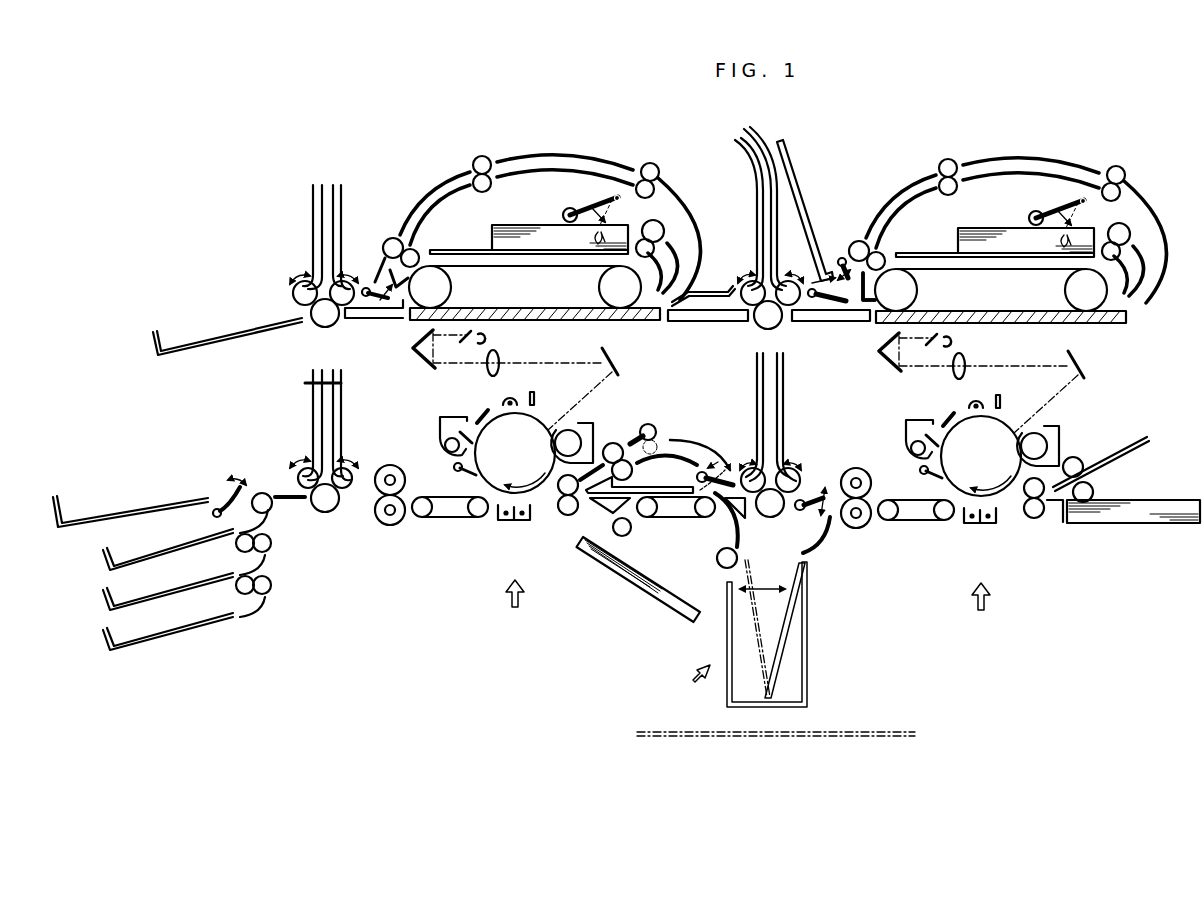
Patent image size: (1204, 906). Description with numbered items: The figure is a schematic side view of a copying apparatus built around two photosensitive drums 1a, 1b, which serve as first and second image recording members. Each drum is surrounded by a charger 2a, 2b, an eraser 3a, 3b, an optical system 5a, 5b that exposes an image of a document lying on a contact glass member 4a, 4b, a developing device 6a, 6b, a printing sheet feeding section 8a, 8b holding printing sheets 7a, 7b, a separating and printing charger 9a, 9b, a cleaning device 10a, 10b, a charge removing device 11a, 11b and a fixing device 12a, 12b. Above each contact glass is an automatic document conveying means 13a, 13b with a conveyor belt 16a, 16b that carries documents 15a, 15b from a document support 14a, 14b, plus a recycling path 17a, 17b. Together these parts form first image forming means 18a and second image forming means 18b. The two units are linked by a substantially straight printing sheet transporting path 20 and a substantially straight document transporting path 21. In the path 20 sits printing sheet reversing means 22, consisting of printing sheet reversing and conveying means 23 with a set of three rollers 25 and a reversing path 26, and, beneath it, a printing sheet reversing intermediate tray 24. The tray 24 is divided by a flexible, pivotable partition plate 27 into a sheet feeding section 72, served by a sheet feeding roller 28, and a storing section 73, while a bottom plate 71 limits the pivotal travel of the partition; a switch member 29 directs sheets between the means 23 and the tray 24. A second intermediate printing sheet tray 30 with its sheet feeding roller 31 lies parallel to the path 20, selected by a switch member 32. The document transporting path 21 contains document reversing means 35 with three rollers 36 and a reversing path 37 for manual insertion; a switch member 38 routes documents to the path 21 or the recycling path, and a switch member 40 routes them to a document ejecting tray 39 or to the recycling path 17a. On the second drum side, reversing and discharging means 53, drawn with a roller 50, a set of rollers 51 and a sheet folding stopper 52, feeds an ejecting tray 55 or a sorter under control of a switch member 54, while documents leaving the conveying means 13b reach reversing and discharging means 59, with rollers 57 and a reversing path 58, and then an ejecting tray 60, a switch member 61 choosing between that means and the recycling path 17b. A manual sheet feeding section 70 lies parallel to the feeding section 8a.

The photosensitive drum 1a is at (1019, 446).
The photosensitive drum 1b is at (478, 482).
The charger 2a is at (955, 390).
The charger 2b is at (503, 400).
The eraser 3a is at (1015, 390).
The eraser 3b is at (534, 395).
The contact glass member 4a is at (1011, 372).
The contact glass member 4b is at (628, 322).
The optical system 5a is at (948, 355).
The optical system 5b is at (473, 357).
The developing device 6a is at (1067, 469).
The developing device 6b is at (575, 425).
The printing sheet 7a is at (1095, 522).
The printing sheet 7b is at (660, 592).
The printing sheet feeding section 8a is at (1165, 525).
The printing sheet feeding section 8b is at (603, 553).
The separating and printing charger 9a is at (955, 539).
The separating and printing charger 9b is at (528, 522).
The cleaning device 10a is at (898, 447).
The cleaning device 10b is at (440, 440).
The charge removing device 11a is at (916, 404).
The charge removing device 11b is at (478, 418).
The fixing device 12a is at (876, 523).
The fixing device 12b is at (390, 526).
The automatic document conveying means 13a is at (1005, 238).
The automatic document conveying means 13b is at (427, 200).
The document support 14a is at (995, 199).
The document support 14b is at (513, 249).
The document 15a is at (1026, 187).
The document 15b is at (541, 224).
The conveyor belt 16a is at (991, 228).
The conveyor belt 16b is at (453, 272).
The recycling path 17a is at (1032, 140).
The recycling path 17b is at (603, 165).
The first image forming means 18a is at (988, 608).
The second image forming means 18b is at (517, 610).
The printing sheet transporting path 20 is at (620, 498).
The document transporting path 21 is at (715, 302).
The printing sheet reversing means 22 is at (690, 688).
The printing sheet reversing and conveying means 23 is at (757, 397).
The printing sheet reversing intermediate tray 24 is at (808, 636).
The rollers 25 is at (710, 474).
The reversing path 26 is at (757, 366).
The partition plate 27 is at (790, 572).
The sheet feeding roller 28 is at (725, 550).
The switch member 29 is at (812, 522).
The second intermediate printing sheet tray 30 is at (665, 452).
The sheet feeding roller 31 is at (650, 424).
The switch member 32 is at (714, 455).
The document reversing means 35 is at (760, 220).
The rollers 36 is at (780, 321).
The reversing path 37 is at (755, 176).
The switch member 38 is at (830, 306).
The document ejecting tray 39 is at (796, 170).
The switch member 40 is at (840, 258).
The feed roller 50 is at (325, 513).
The rollers 51 is at (320, 403).
The sheet folding stopper 52 is at (305, 383).
The reversing and discharging means 53 is at (333, 430).
The switch member 54 is at (222, 503).
The ejecting tray 55 is at (115, 510).
The rollers 57 is at (338, 322).
The reversing path 58 is at (322, 239).
The reversing and discharging means 59 is at (312, 198).
The ejecting tray 60 is at (210, 338).
The switch member 61 is at (364, 287).
The manual sheet feeding section 70 is at (1110, 461).
The bottom plate 71 is at (705, 735).
The sheet feeding section 72 is at (748, 706).
The storing section 73 is at (787, 706).